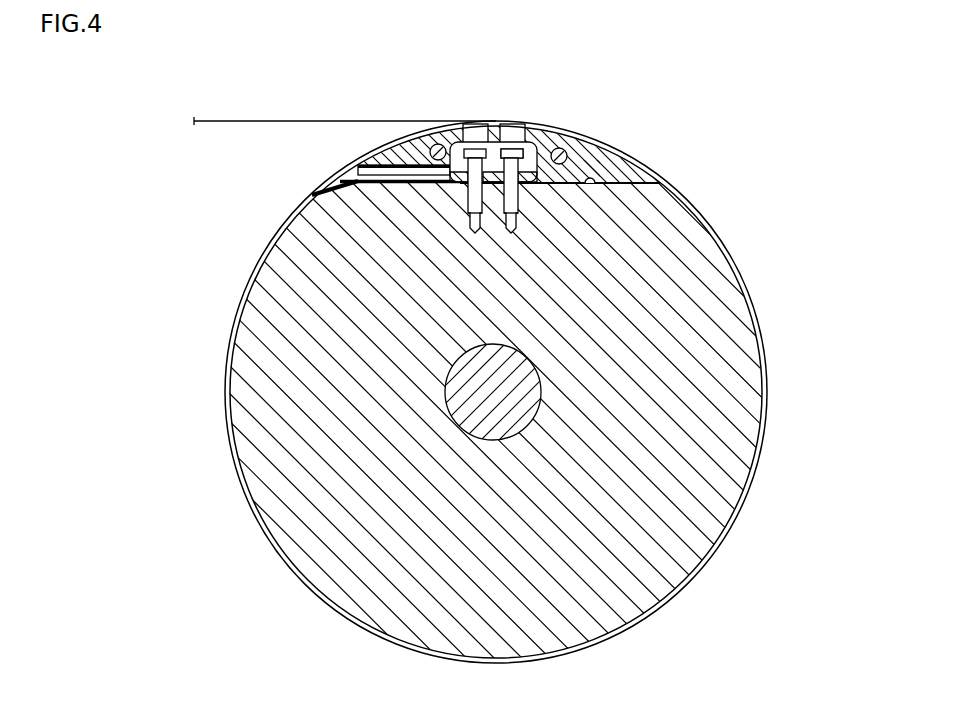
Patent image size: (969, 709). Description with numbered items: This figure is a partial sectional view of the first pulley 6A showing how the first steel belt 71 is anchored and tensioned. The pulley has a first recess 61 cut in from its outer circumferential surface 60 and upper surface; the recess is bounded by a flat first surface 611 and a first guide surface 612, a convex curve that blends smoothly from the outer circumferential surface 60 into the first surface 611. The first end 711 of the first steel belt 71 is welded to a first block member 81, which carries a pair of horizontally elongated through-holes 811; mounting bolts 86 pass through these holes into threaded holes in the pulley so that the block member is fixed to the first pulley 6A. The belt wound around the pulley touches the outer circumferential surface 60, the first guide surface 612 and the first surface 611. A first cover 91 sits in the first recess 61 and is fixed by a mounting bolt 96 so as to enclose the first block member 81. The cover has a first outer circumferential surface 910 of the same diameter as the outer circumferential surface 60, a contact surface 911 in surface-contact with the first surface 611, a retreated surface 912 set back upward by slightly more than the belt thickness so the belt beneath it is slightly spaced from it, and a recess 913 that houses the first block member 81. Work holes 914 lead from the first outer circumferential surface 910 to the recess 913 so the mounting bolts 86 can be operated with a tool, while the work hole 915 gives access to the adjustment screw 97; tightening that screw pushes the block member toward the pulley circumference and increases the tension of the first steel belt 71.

The first pulley 6A is at (252, 370).
The outer circumferential surface 60 is at (262, 250).
The first recess 61 is at (640, 182).
The first steel belt 71 is at (285, 120).
The first block member 81 is at (531, 152).
The through-holes 811 is at (510, 148).
The mounting bolts 86 is at (472, 148).
The first cover 91 is at (586, 153).
The mounting bolt 96 is at (566, 150).
The adjustment screw 97 is at (360, 170).
The first surface 611 is at (589, 189).
The first guide surface 612 is at (318, 191).
The first end 711 is at (458, 184).
The first outer circumferential surface 910 is at (415, 135).
The contact surface 911 is at (625, 185).
The retreated surface 912 is at (390, 184).
The recess 913 is at (533, 184).
The work holes 914 is at (483, 130).
The work hole 915 is at (375, 165).